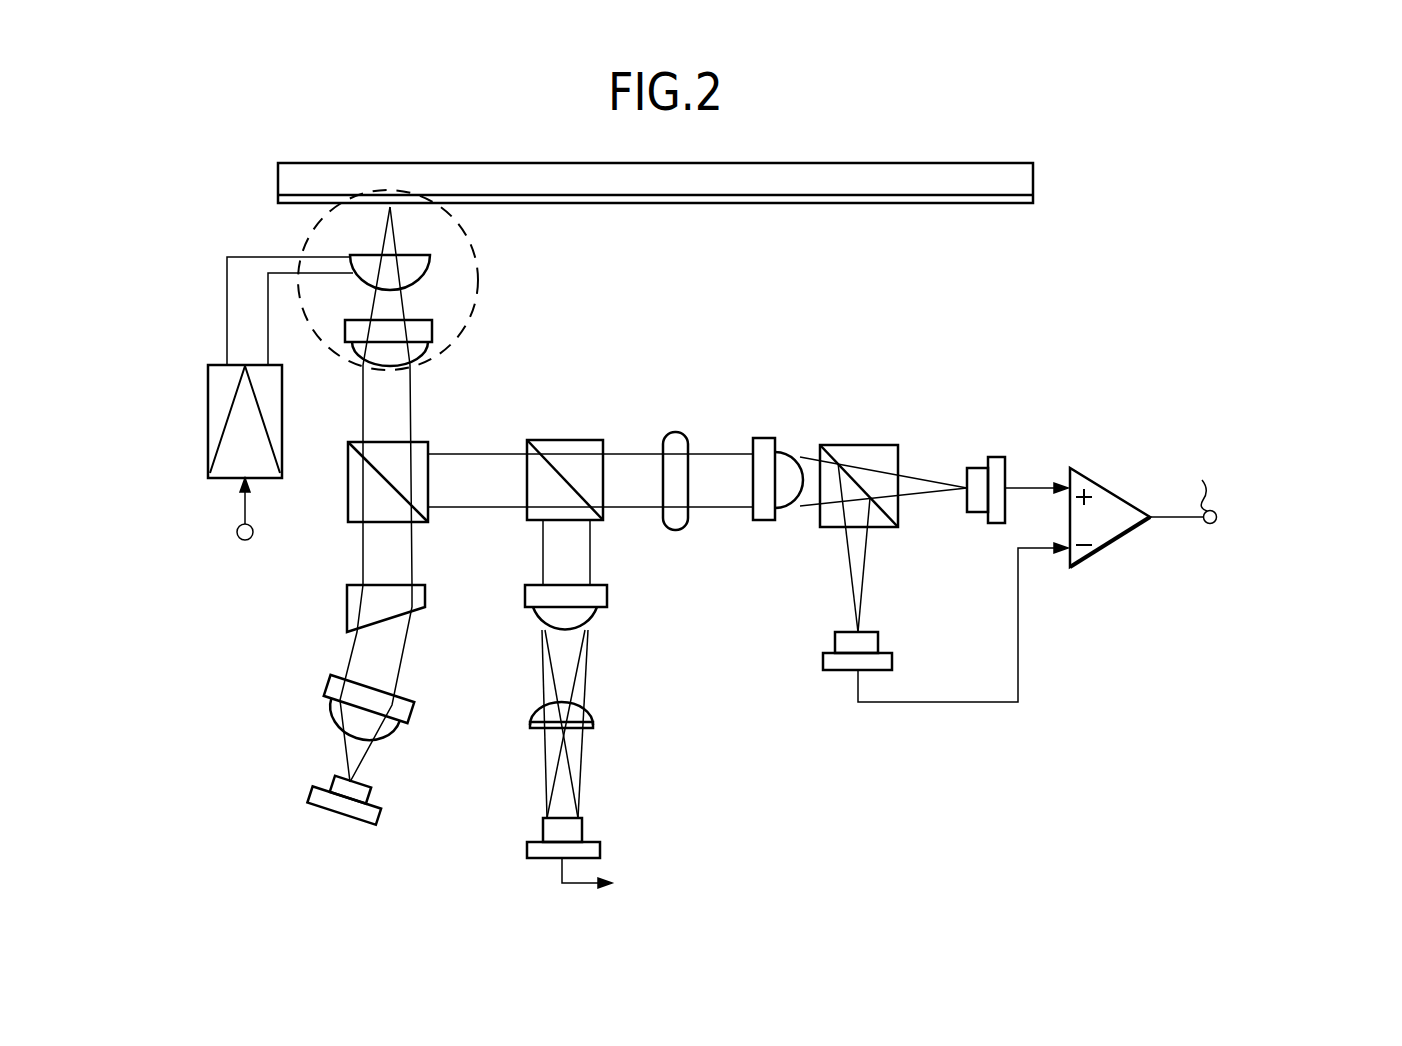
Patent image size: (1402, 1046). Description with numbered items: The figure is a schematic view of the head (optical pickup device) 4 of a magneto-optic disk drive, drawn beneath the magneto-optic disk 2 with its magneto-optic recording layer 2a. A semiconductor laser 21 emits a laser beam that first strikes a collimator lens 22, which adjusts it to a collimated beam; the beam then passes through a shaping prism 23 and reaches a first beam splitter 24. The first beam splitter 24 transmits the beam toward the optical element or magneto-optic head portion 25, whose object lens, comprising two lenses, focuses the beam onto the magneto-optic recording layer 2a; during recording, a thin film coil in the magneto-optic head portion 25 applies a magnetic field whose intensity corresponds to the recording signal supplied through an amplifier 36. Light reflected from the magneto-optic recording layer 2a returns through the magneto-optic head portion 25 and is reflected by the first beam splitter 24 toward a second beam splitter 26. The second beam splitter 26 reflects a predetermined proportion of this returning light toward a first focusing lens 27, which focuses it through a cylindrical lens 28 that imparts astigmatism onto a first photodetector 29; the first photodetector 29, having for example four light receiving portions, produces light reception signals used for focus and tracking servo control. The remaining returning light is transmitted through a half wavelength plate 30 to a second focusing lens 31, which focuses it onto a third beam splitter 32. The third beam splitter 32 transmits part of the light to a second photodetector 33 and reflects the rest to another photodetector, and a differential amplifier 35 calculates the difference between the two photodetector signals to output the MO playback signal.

The magneto-optic disk 2 is at (848, 181).
The magneto-optic recording layer 2a is at (1035, 198).
The head (optical pickup device) 4 is at (836, 745).
The semiconductor laser 21 is at (370, 795).
The collimator lens 22 is at (407, 700).
The shaping prism 23 is at (428, 598).
The first beam splitter 24 is at (430, 440).
The optical element (magneto-optic head portion) 25 is at (484, 282).
The second beam splitter 26 is at (557, 440).
The first focusing lens 27 is at (608, 595).
The cylindrical lens 28 is at (594, 720).
The first photodetector 29 is at (583, 825).
The ½ wavelength plate 30 is at (680, 432).
The second focusing lens 31 is at (768, 438).
The third beam splitter 32 is at (858, 445).
The second photodetector 33 is at (980, 468).
The differential amplifier 35 is at (1116, 492).
The amplifier 36 is at (208, 405).